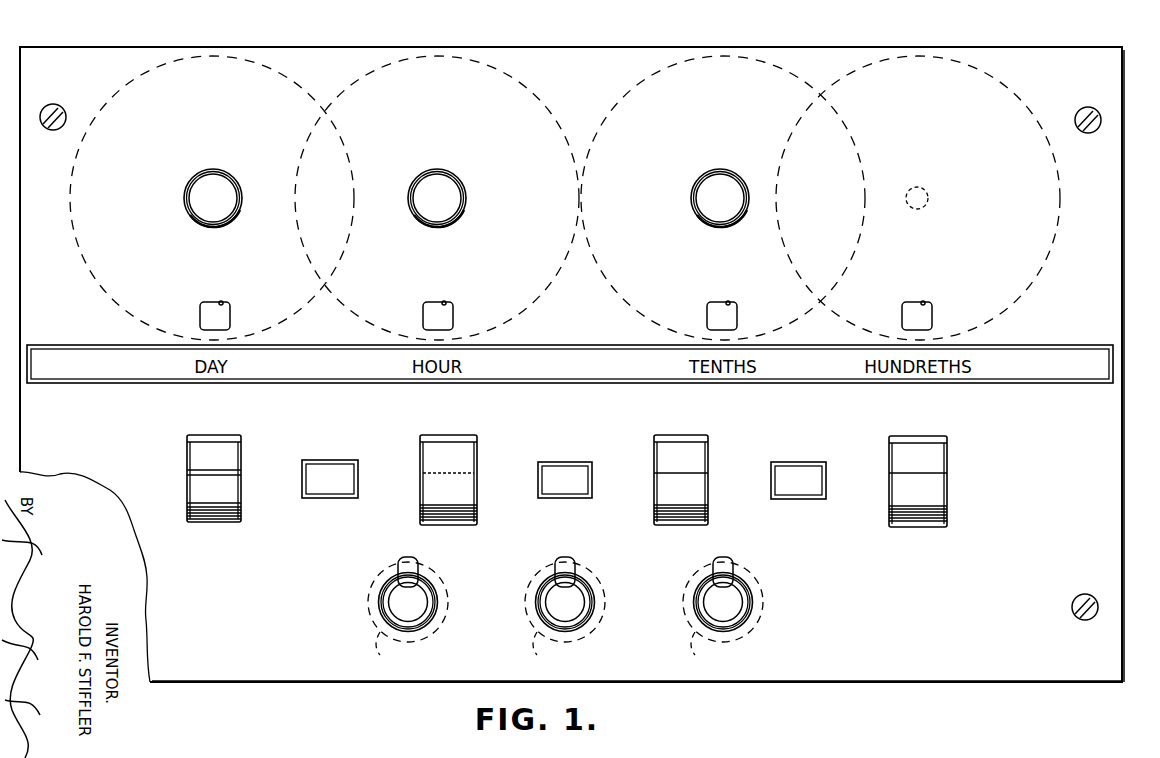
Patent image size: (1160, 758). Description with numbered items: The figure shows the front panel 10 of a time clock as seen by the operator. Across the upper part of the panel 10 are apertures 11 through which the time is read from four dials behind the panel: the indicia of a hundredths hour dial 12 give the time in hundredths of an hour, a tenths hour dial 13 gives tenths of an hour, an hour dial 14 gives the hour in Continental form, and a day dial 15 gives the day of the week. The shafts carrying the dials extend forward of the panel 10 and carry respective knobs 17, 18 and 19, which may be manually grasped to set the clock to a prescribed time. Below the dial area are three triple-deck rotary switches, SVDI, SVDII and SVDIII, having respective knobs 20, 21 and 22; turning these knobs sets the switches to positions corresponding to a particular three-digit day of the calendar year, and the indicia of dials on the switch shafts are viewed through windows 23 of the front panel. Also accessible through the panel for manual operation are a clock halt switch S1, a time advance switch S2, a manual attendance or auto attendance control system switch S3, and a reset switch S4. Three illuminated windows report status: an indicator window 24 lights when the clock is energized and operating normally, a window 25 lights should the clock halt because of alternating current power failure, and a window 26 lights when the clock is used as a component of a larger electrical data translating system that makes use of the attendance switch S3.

The panel 10 is at (1102, 573).
The apertures 11 is at (221, 301).
The hundredths hour dial 12 is at (862, 67).
The tenths hour dial 13 is at (650, 74).
The hour dial 14 is at (505, 72).
The day dial 15 is at (277, 70).
The knob 17 is at (708, 190).
The knob 18 is at (425, 190).
The knob 19 is at (195, 190).
The knob 20 is at (396, 605).
The knob 21 is at (553, 605).
The knob 22 is at (711, 605).
The windows 23 is at (400, 561).
The indicator window 24 is at (797, 498).
The window 25 is at (328, 497).
The window 26 is at (562, 497).
The clock halt switch S1 is at (678, 517).
The time advance switch S2 is at (915, 518).
The manual attendance or auto attendance control system switch S3 is at (448, 517).
The reset switch S4 is at (214, 517).